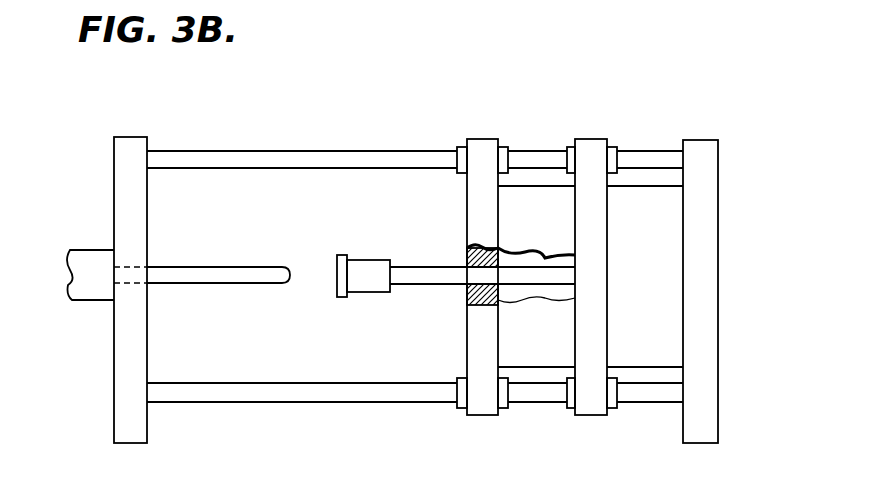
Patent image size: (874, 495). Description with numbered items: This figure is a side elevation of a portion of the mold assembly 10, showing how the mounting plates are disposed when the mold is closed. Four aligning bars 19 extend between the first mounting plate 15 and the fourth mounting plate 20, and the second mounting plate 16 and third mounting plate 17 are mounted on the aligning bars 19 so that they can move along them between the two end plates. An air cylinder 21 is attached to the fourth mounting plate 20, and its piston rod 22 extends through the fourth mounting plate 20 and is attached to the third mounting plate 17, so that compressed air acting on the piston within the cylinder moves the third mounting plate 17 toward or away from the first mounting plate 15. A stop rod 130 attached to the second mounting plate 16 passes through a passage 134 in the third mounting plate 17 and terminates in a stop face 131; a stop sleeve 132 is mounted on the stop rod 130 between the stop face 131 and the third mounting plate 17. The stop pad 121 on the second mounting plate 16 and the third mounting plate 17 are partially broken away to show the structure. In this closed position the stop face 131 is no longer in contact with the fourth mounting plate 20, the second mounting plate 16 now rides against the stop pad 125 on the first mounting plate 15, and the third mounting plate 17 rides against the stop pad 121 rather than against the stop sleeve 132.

The mold assembly 10 is at (445, 125).
The first mounting plate 15 is at (700, 140).
The second mounting plate 16 is at (592, 139).
The third mounting plate 17 is at (482, 139).
The aligning bars 19 is at (189, 151).
The fourth mounting plate 20 is at (128, 137).
The air cylinder 21 is at (80, 301).
The piston rod 22 is at (193, 285).
The stop pad 121 is at (530, 190).
The stop pad 125 is at (650, 190).
The stop rod 130 is at (412, 267).
The stop face 131 is at (337, 262).
The stop sleeve 132 is at (358, 260).
The passage 134 is at (470, 294).